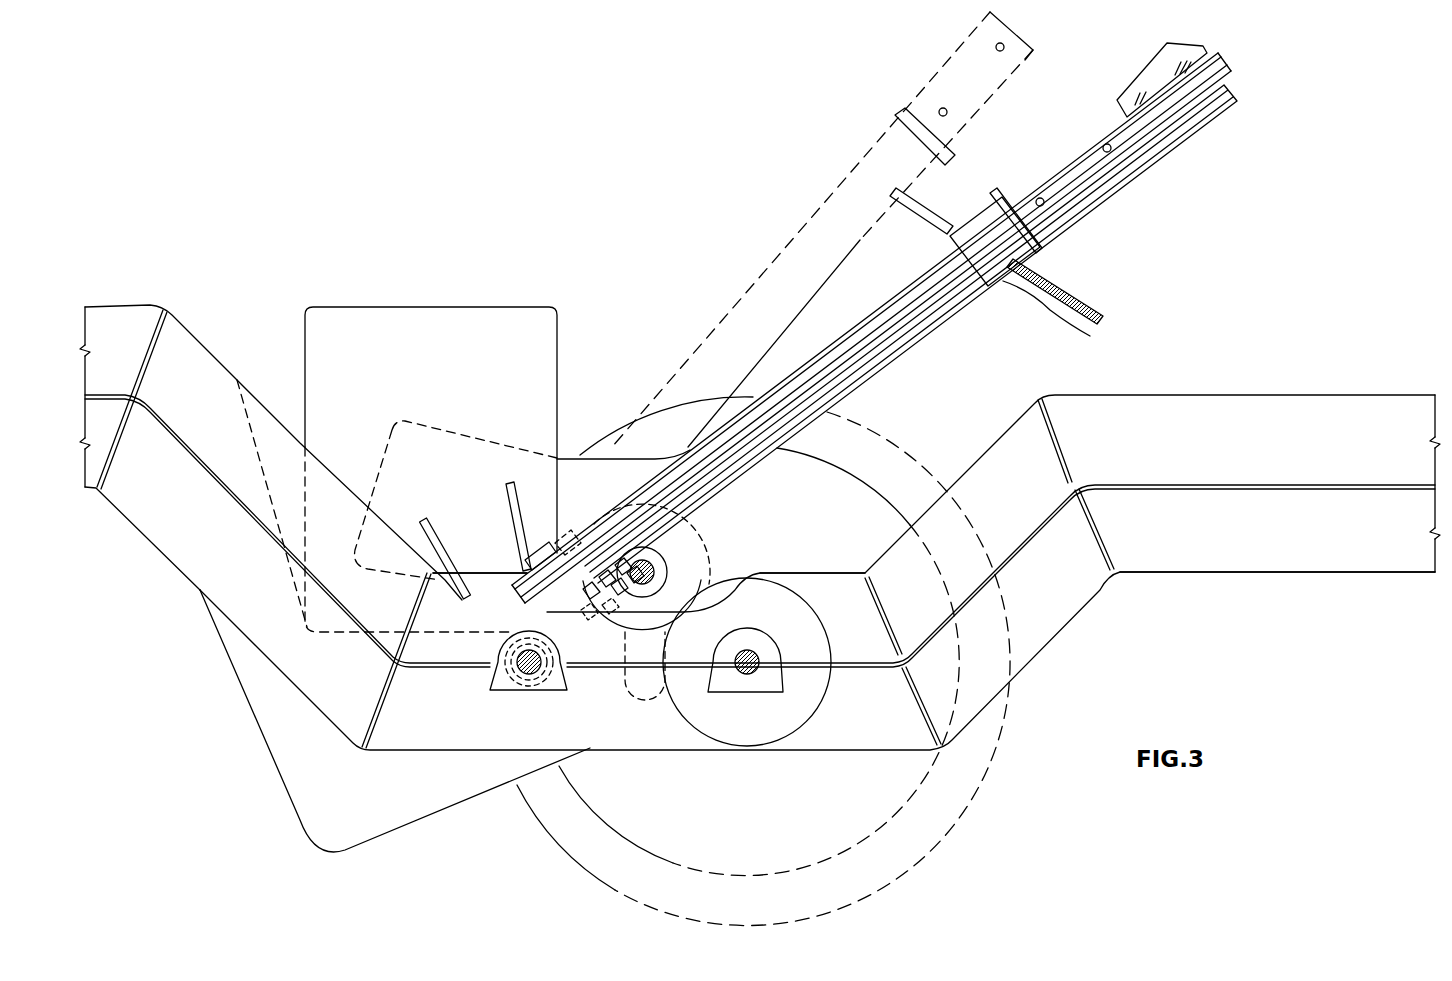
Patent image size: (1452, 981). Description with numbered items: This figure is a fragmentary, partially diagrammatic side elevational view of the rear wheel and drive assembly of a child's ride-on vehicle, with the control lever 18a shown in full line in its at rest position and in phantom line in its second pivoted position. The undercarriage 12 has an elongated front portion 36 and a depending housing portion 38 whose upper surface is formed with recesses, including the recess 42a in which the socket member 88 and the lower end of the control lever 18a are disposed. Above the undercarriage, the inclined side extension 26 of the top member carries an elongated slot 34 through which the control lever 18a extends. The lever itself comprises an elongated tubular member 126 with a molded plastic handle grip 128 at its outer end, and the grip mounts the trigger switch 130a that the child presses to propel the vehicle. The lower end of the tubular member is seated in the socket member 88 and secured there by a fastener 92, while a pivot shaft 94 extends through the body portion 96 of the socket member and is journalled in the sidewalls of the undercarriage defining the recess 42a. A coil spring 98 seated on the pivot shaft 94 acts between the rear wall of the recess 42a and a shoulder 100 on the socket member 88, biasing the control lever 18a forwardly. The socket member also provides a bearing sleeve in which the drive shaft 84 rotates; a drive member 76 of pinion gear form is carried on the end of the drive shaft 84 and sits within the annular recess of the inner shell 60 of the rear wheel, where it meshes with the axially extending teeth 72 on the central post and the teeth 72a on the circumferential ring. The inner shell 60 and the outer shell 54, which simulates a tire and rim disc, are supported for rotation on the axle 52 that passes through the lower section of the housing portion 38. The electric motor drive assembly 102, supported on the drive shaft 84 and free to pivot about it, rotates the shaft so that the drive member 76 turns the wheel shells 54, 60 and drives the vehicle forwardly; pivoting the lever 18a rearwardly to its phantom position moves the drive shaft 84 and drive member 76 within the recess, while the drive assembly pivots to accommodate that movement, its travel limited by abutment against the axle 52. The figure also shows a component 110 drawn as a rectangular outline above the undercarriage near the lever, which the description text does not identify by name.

The undercarriage 12 is at (1304, 390).
The control lever 18a is at (910, 344).
The inclined side extension 26 is at (1093, 307).
The elongated slot 34 is at (1020, 270).
The elongated front portion 36 is at (1368, 573).
The housing portion 38 is at (836, 585).
The recess 42a is at (487, 585).
The axle 52 is at (752, 678).
The rear wheel outer shell 54 is at (952, 841).
The inner shell 60 is at (1000, 737).
The teeth 72 is at (667, 738).
The teeth 72a is at (613, 827).
The drive member 76 is at (627, 690).
The drive shaft 84 is at (672, 562).
The socket member 88 is at (665, 575).
The fastener 92 is at (598, 528).
The pivot shaft 94 is at (535, 678).
The body portion 96 is at (672, 620).
The coil spring 98 is at (441, 540).
The shoulder 100 is at (530, 550).
The electric motor drive assembly 102 is at (613, 453).
The cover 110 is at (447, 305).
The tubular member 126 is at (882, 362).
The handle grip 128 is at (1135, 155).
The trigger switch 130a is at (1160, 75).